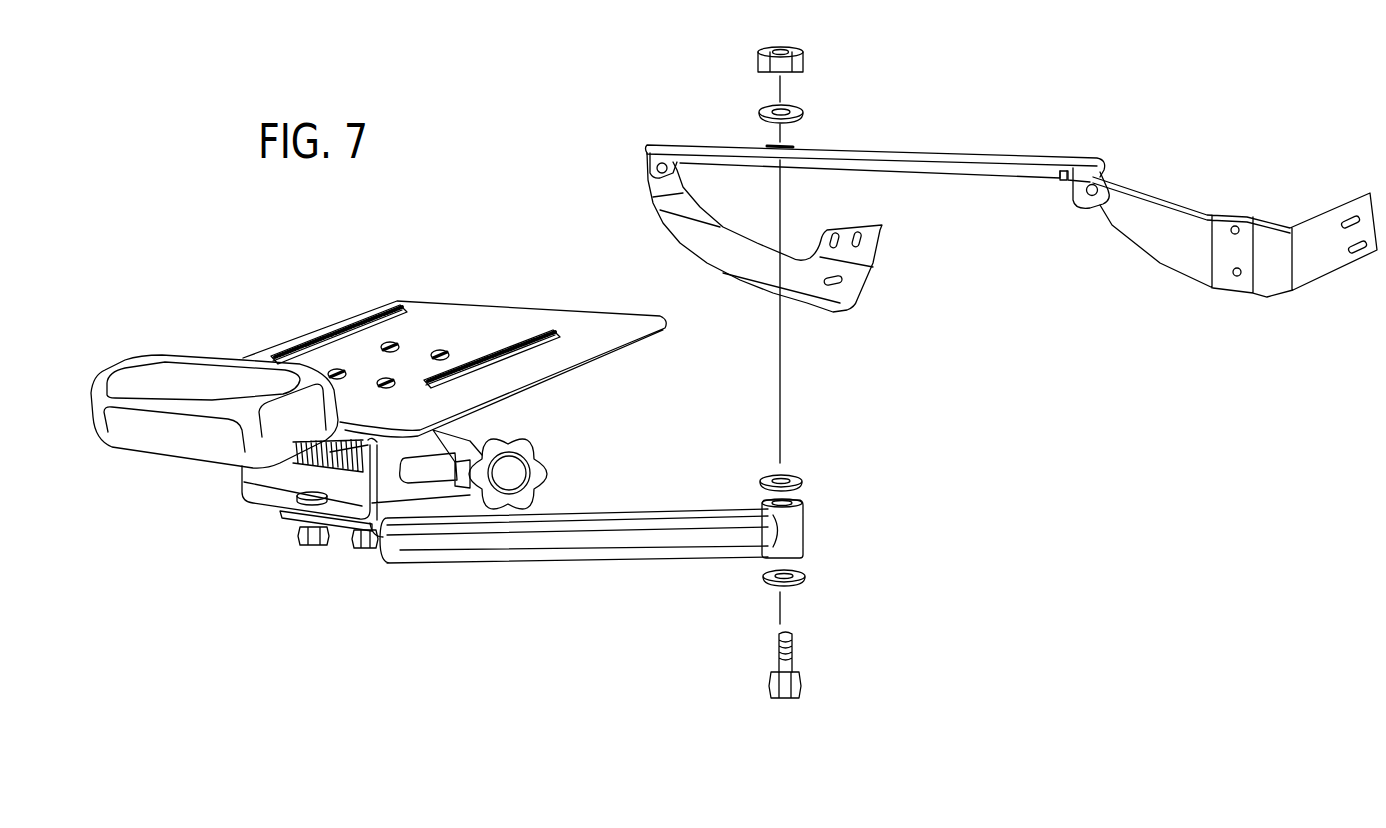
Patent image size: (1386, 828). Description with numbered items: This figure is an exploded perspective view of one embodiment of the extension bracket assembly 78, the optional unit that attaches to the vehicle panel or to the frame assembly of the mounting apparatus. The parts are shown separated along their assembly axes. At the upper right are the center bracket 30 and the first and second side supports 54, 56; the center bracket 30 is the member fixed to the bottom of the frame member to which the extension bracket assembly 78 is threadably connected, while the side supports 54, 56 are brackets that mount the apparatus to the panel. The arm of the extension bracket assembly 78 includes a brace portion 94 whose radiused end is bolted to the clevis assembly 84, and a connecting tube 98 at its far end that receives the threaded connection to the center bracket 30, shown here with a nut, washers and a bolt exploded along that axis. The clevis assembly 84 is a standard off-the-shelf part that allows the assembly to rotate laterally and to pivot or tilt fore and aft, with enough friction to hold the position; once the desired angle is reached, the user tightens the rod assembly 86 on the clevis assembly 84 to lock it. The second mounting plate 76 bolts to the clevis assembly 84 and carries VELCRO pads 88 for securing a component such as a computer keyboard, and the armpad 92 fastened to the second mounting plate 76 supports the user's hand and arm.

The center bracket 30 is at (1010, 170).
The first side support 54 is at (1157, 228).
The second side support 56 is at (806, 283).
The second mounting plate 76 is at (478, 323).
The extension bracket assembly 78 is at (412, 612).
The clevis assembly 84 is at (383, 487).
The rod assembly 86 is at (518, 474).
The VELCRO pads 88 is at (357, 324).
The armpad 92 is at (153, 447).
The brace portion 94 is at (587, 538).
The connecting tube 98 is at (790, 535).